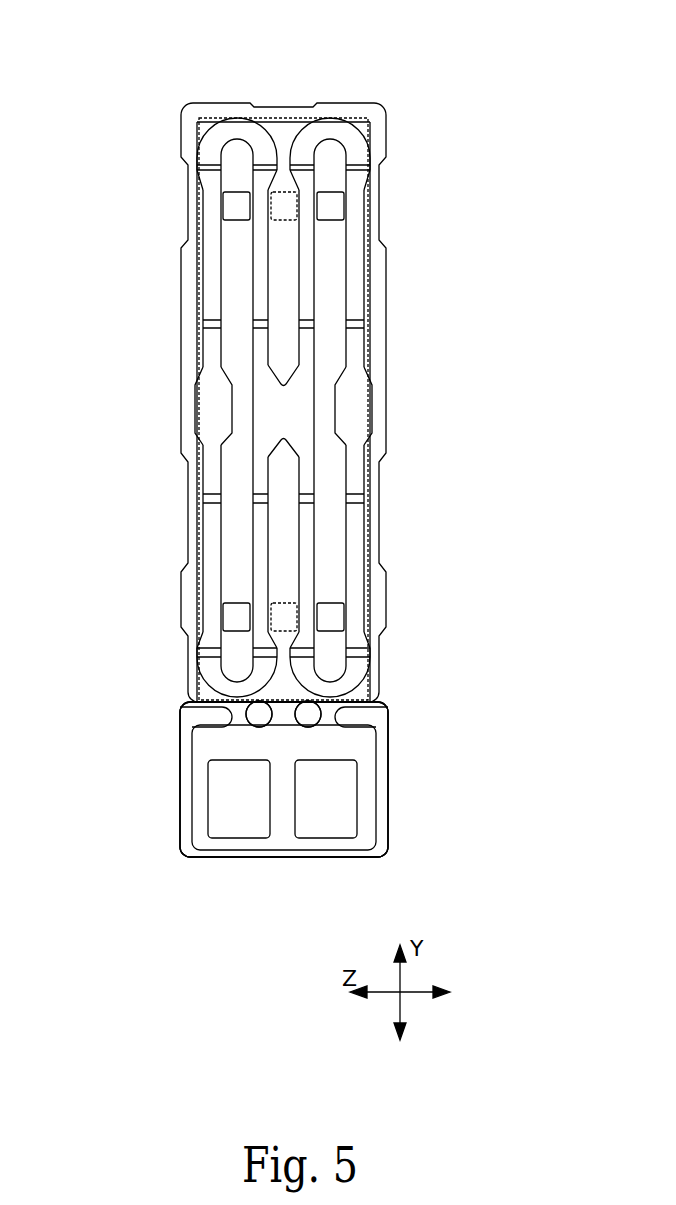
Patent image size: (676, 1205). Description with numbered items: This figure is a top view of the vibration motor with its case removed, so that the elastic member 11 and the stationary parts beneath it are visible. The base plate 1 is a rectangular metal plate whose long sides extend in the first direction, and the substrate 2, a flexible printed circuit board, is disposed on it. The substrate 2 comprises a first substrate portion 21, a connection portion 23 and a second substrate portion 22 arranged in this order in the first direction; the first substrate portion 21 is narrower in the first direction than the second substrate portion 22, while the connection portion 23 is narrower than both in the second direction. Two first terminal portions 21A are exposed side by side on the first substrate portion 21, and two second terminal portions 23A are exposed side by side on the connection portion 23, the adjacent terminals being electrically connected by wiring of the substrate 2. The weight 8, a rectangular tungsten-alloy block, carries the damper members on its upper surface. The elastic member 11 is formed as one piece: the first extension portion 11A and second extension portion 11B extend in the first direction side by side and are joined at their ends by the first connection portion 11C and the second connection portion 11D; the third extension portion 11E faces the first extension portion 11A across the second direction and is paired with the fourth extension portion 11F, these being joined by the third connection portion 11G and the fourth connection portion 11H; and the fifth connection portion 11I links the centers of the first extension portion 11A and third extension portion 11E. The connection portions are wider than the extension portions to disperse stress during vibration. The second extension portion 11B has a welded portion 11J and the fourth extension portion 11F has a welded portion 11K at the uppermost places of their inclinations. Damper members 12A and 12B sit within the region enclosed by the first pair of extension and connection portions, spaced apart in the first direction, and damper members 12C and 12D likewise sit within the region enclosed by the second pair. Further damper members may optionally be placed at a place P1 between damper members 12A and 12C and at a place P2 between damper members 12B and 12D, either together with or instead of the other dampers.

The base plate 1 is at (375, 853).
The substrate 2 is at (200, 845).
The weight 8 is at (292, 118).
The elastic member 11 is at (232, 133).
The first extension portion 11A is at (252, 273).
The second extension portion 11B is at (205, 300).
The first connection portion 11C is at (198, 122).
The second connection portion 11D is at (222, 688).
The third extension portion 11E is at (318, 262).
The fourth extension portion 11F is at (362, 293).
The third connection portion 11G is at (365, 115).
The fourth connection portion 11H is at (367, 693).
The fifth connection portion 11I is at (285, 403).
The welded portion 11J is at (208, 408).
The welded portion 11K is at (363, 408).
The damper member 12A is at (224, 204).
The damper member 12B is at (224, 610).
The damper member 12C is at (345, 204).
The damper member 12D is at (344, 616).
The first substrate portion 21 is at (380, 820).
The first terminal portion 21A is at (313, 825).
The second substrate portion 22 is at (363, 685).
The connection portion 23 is at (334, 718).
The second terminal portion 23A is at (288, 724).
The place P1 is at (287, 192).
The place P2 is at (282, 603).